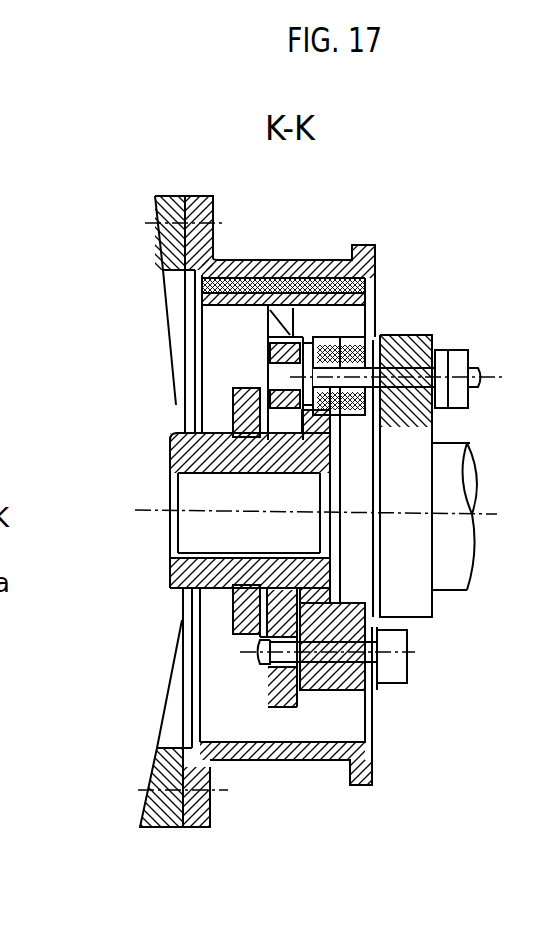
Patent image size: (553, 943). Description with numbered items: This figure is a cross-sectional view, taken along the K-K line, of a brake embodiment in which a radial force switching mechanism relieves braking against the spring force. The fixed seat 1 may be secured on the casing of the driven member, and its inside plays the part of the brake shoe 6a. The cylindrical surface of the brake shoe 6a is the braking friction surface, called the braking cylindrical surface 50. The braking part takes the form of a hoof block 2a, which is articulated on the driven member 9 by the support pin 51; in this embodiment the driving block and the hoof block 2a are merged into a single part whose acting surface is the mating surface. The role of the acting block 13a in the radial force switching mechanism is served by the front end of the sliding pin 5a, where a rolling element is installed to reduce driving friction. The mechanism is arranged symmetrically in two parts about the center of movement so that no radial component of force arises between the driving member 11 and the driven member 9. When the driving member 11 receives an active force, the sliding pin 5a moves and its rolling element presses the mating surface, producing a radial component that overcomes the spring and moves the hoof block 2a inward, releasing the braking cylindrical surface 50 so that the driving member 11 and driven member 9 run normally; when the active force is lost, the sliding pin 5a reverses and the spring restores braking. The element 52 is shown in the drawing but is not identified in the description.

The fixed seat 1 is at (245, 268).
The hoof block 2a is at (300, 320).
The sliding pin 5a is at (407, 337).
The brake shoe 6a is at (300, 750).
The driven member 9 is at (187, 572).
The driving member 11 is at (413, 560).
The acting block 13a is at (303, 374).
The braking cylindrical surface 50 is at (257, 747).
The support pin 51 is at (262, 667).
The upper bushing 52 is at (270, 348).